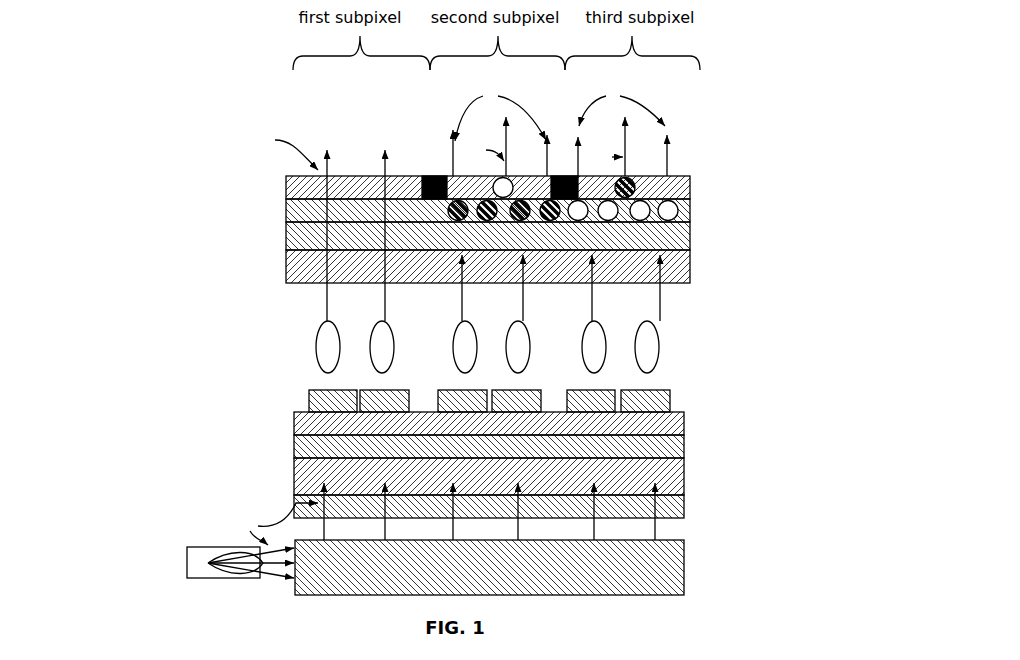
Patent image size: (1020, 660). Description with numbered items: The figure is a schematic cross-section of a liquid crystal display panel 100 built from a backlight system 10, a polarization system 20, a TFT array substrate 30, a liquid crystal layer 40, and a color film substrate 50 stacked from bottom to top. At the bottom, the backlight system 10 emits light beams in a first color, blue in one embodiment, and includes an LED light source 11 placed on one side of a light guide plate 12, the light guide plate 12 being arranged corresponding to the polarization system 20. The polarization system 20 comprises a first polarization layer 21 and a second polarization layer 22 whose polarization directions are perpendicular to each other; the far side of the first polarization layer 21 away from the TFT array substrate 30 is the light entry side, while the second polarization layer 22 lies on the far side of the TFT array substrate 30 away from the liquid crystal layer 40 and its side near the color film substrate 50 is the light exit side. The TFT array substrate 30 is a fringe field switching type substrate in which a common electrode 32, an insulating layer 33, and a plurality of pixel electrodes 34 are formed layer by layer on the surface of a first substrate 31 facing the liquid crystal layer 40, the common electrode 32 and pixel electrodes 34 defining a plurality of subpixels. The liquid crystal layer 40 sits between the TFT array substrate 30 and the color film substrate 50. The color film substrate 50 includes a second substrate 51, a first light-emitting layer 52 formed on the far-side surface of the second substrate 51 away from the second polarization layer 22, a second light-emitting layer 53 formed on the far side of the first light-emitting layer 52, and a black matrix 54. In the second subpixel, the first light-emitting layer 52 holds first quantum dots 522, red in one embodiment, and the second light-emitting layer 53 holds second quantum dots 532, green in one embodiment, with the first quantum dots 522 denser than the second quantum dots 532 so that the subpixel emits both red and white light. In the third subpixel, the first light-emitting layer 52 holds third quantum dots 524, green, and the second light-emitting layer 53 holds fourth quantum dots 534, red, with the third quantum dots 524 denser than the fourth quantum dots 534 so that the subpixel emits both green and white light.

The liquid crystal display panel 100 is at (166, 78).
The backlight system 10 is at (130, 532).
The LED light source 11 is at (186, 557).
The light guide plate 12 is at (686, 582).
The polarization system 20 is at (796, 318).
The first polarization layer 21 is at (694, 503).
The second polarization layer 22 is at (700, 268).
The TFT array substrate 30 is at (130, 387).
The first substrate 31 is at (292, 476).
The common electrode 32 is at (292, 447).
The insulating layer 33 is at (292, 423).
The pixel electrodes 34 is at (303, 400).
The liquid crystal layer 40 is at (652, 360).
The color film substrate 50 is at (128, 175).
The second substrate 51 is at (284, 244).
The first light-emitting layer 52 is at (284, 210).
The second light-emitting layer 53 is at (284, 188).
The black matrix 54 is at (432, 174).
The first quantum dots 522 is at (458, 223).
The third quantum dots 524 is at (578, 216).
The second quantum dots 532 is at (503, 200).
The fourth quantum dots 534 is at (625, 200).